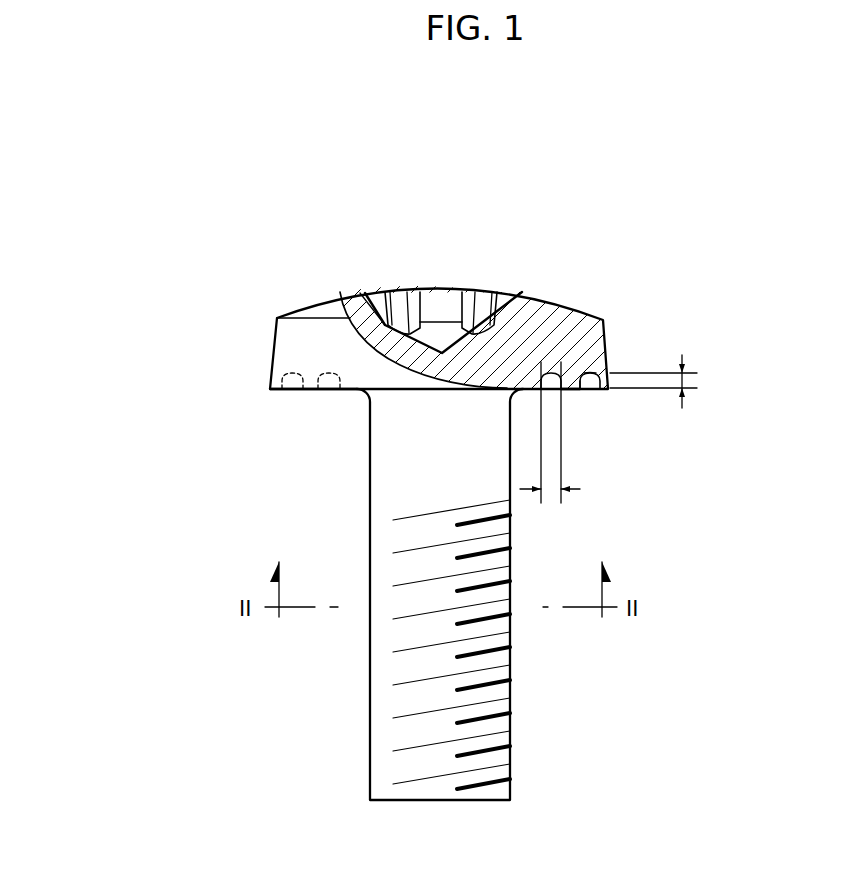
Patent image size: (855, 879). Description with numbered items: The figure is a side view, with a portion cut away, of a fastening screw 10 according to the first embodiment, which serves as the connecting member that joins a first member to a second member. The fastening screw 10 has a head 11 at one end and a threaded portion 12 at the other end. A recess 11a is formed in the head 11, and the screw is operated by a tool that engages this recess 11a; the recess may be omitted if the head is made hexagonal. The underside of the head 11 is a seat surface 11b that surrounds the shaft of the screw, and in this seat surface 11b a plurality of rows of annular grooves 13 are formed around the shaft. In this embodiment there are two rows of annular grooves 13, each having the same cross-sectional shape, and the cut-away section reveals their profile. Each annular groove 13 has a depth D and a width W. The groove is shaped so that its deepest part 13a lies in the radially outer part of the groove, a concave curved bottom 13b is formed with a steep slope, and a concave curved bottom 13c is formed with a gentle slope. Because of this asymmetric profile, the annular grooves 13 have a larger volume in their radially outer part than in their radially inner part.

The fastening screw 10 is at (477, 506).
The head 11 is at (477, 349).
The recess 11a is at (438, 310).
The seat surface 11b is at (312, 390).
The threaded portion 12 is at (503, 672).
The annular grooves 13 is at (580, 362).
The deepest part 13a is at (593, 373).
The concave curved bottom (steep slope) 13b is at (585, 390).
The concave curved bottom (gentle slope) 13c is at (582, 390).
The depth D is at (686, 382).
The width W is at (550, 492).